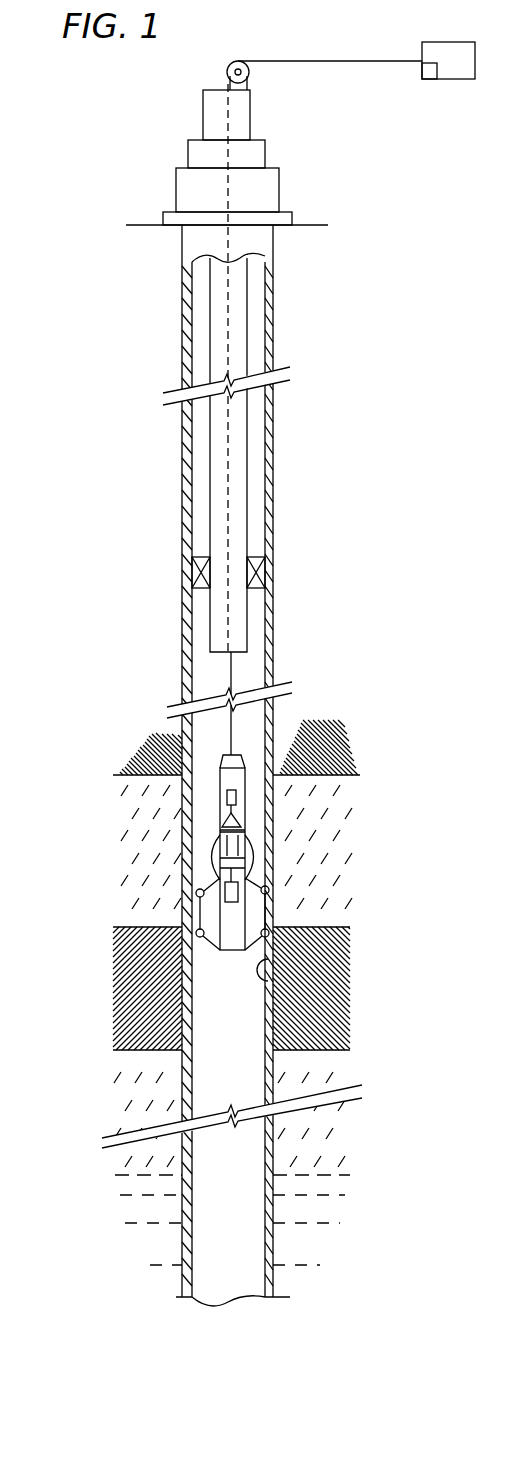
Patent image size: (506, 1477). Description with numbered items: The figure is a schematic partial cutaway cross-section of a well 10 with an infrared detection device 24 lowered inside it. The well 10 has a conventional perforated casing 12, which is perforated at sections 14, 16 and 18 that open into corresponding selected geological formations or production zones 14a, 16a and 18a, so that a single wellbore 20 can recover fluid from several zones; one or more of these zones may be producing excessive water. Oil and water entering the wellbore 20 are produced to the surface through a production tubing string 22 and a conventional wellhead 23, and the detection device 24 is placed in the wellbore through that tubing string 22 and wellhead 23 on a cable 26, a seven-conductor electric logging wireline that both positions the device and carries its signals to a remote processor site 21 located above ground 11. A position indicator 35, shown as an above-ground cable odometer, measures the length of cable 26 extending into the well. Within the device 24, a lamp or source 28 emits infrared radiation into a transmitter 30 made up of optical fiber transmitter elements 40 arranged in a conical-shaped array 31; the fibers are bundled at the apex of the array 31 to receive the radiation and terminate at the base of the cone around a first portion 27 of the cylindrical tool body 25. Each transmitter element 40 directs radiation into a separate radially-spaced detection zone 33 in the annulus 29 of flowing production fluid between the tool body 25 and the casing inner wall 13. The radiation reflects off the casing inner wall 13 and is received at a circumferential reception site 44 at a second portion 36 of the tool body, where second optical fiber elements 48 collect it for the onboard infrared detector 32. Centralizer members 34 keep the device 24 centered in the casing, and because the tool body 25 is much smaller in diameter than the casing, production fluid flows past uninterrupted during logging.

The well 10 is at (303, 357).
The ground 11 is at (303, 225).
The perforated casing 12 is at (275, 572).
The casing inner wall 13 is at (277, 988).
The perforated casing section 14 is at (180, 734).
The production zone 14a is at (122, 752).
The perforated casing section 16 is at (176, 1005).
The production zone 16a is at (135, 987).
The perforated casing section 18 is at (187, 1240).
The production zone 18a is at (127, 1192).
The wellbore 20 is at (221, 1016).
The processor site 21 is at (450, 80).
The production tubing string 22 is at (247, 282).
The wellhead 23 is at (265, 153).
The infrared detection device 24 is at (258, 797).
The tool body 25 is at (183, 758).
The cable 26 is at (303, 61).
The first portion of tool body 27 is at (248, 840).
The infrared source 28 is at (227, 797).
The annulus 29 is at (268, 755).
The transmitter 30 is at (212, 820).
The conical-shaped array 31 is at (218, 840).
The infrared detector 32 is at (269, 934).
The detection zones 33 is at (248, 860).
The centralizer members 34 is at (197, 935).
The position indicator 35 is at (430, 80).
The second portion of tool body 36 is at (238, 906).
The transmitter elements 40 is at (248, 818).
The circumferential reception site 44 is at (240, 890).
The second optical fiber elements 48 is at (197, 891).